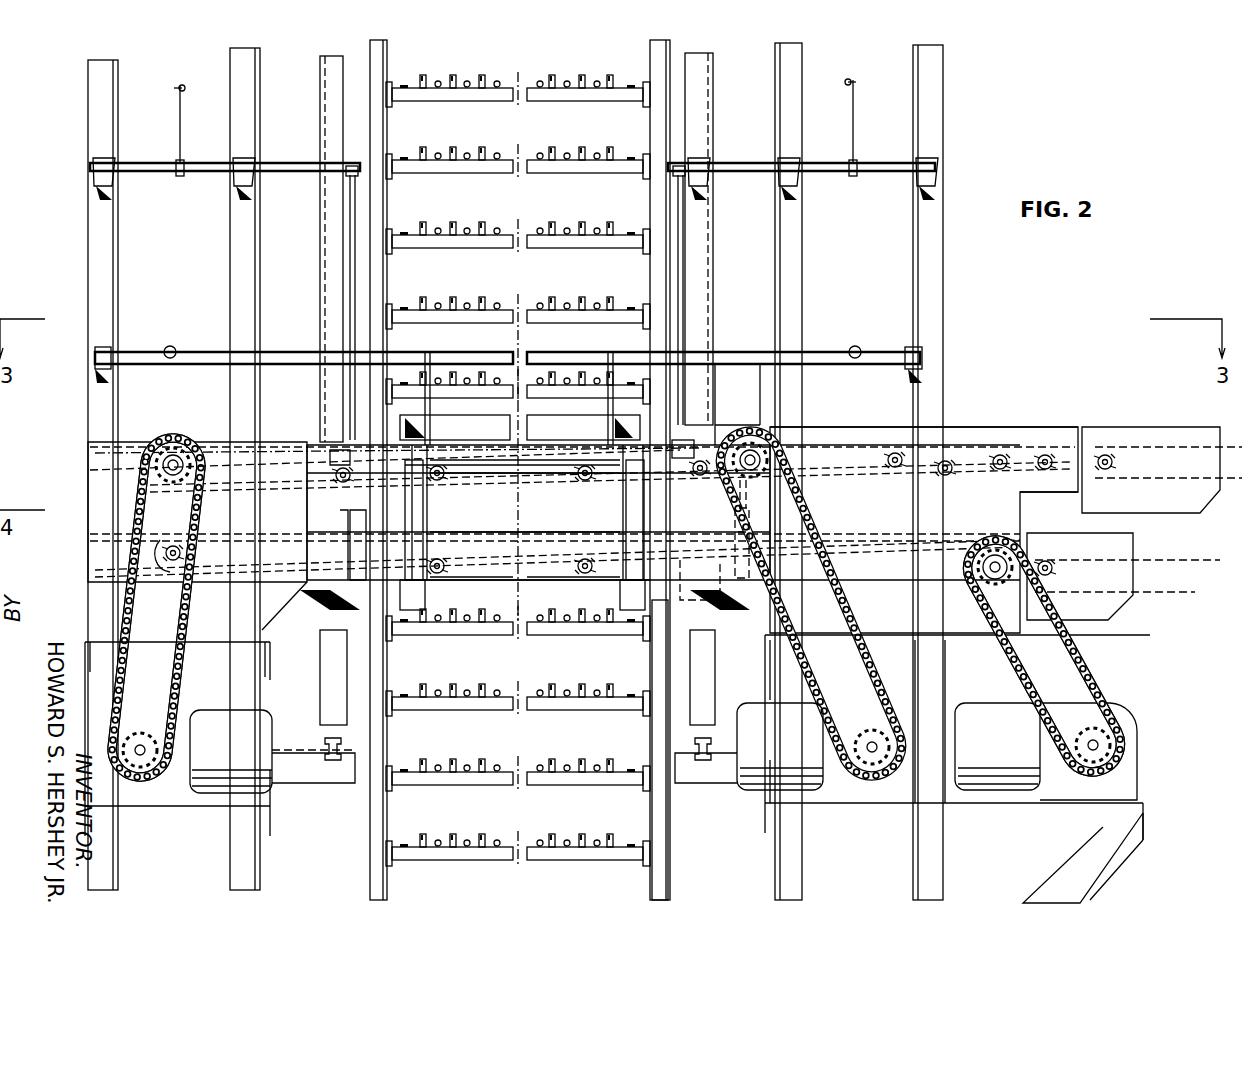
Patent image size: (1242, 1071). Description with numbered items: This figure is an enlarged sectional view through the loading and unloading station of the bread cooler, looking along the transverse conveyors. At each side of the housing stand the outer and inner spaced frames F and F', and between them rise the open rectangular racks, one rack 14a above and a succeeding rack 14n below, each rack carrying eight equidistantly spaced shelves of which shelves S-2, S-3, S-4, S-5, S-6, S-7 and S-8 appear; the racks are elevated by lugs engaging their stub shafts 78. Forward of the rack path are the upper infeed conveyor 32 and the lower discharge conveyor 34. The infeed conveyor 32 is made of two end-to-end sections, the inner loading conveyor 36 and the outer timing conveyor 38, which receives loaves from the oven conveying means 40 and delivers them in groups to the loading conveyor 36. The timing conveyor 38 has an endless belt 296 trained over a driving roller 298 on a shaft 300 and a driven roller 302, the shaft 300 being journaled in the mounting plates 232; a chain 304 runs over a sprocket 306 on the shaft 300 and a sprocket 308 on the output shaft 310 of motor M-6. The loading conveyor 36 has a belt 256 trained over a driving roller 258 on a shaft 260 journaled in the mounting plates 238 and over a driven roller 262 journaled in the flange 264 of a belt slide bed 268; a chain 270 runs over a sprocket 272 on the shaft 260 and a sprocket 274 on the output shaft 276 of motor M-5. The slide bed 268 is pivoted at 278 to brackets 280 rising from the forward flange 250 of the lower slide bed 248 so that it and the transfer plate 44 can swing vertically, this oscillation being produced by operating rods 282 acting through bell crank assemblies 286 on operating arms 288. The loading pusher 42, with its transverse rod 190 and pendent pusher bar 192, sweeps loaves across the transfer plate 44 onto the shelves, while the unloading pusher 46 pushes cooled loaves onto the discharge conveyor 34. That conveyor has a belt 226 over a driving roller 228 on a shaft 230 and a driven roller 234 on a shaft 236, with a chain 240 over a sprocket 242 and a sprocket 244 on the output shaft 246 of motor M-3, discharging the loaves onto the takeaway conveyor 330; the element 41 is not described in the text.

The upright column 14a is at (667, 56).
The upright column 14n is at (668, 822).
The infeed conveyor 32 is at (525, 507).
The discharge conveyor 34 is at (345, 532).
The loading conveyor 36 is at (335, 445).
The timing conveyor 38 is at (840, 427).
The conveying means 40 is at (1160, 418).
The housing 41 is at (1049, 513).
The loading pusher 42 is at (758, 368).
The transfer plate 44 is at (538, 455).
The unloading pusher 46 is at (525, 489).
The rack stub shaft 78 is at (315, 606).
The transversely extending rod 190 is at (822, 350).
The pusher bar 192 is at (498, 418).
The endless belt 226 is at (690, 540).
The driving roller 228 is at (993, 545).
The shaft 230 is at (990, 585).
The mounting plates 232 is at (968, 428).
The driven roller 234 is at (157, 565).
The shaft 236 is at (173, 545).
The mounting plates 238 is at (130, 440).
The chain 240 is at (1090, 650).
The sprocket 242 is at (1018, 628).
The sprocket 244 is at (1070, 715).
The output shaft 246 is at (1105, 740).
The belt slide bed 248 is at (575, 565).
The depending flanged portion 250 is at (505, 585).
The endless belt 256 is at (285, 476).
The driving roller 258 is at (158, 483).
The shaft 260 is at (165, 465).
The driven roller 262 is at (688, 473).
The flange 264 is at (525, 480).
The belt slide bed 268 is at (340, 455).
The chain 270 is at (133, 572).
The sprocket 272 is at (160, 496).
The sprocket 274 is at (142, 720).
The output shaft 276 is at (148, 745).
The pivotal connection 278 is at (524, 520).
The brackets 280 is at (521, 595).
The operating rods 282 is at (182, 86).
The bell crank assemblies 286 is at (179, 132).
The operating arms 288 is at (350, 258).
The endless belt 296 is at (895, 482).
The driving roller 298 is at (758, 475).
The shaft 300 is at (762, 453).
The driven roller 302 is at (1055, 453).
The chain 304 is at (845, 592).
The sprocket 306 is at (812, 493).
The sprocket 308 is at (862, 722).
The output shaft 310 is at (868, 760).
The takeaway conveyor 330 is at (1125, 612).
The outer frame F is at (525, 472).
The inner frame F' is at (529, 471).
The gear head reduction motor M-5 is at (231, 751).
The reduction gear head motor M-6 is at (780, 746).
The gear head reduction motor M-3 is at (997, 746).
The shelf S-2 is at (506, 636).
The shelf S-3 is at (515, 710).
The shelf S-4 is at (622, 100).
The shelf S-5 is at (614, 174).
The shelf S-6 is at (618, 249).
The shelf S-7 is at (620, 323).
The shelf S-8 is at (596, 397).